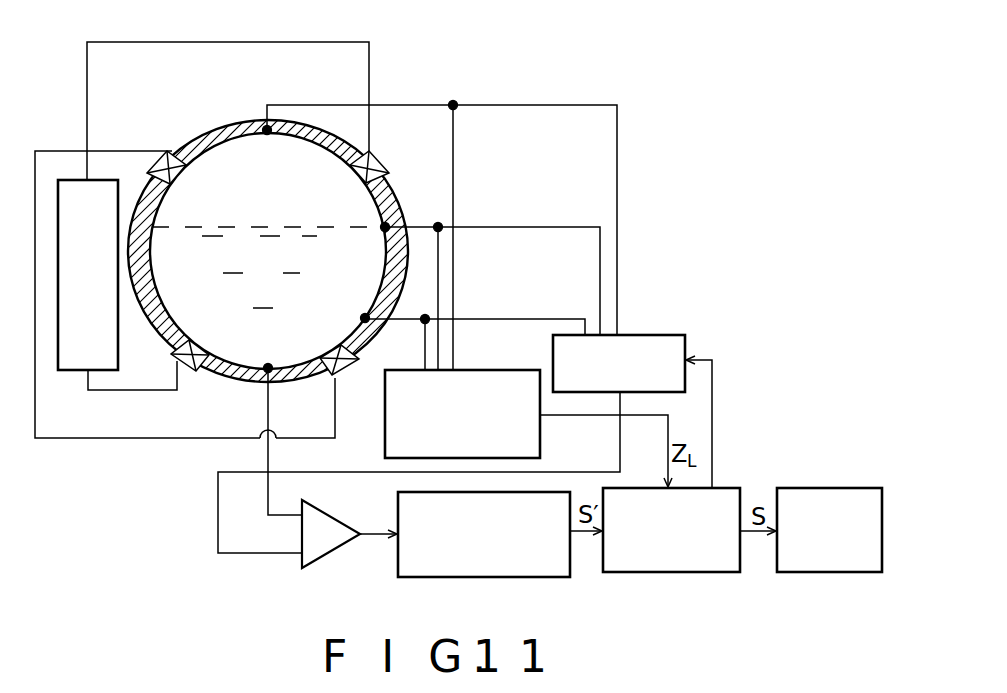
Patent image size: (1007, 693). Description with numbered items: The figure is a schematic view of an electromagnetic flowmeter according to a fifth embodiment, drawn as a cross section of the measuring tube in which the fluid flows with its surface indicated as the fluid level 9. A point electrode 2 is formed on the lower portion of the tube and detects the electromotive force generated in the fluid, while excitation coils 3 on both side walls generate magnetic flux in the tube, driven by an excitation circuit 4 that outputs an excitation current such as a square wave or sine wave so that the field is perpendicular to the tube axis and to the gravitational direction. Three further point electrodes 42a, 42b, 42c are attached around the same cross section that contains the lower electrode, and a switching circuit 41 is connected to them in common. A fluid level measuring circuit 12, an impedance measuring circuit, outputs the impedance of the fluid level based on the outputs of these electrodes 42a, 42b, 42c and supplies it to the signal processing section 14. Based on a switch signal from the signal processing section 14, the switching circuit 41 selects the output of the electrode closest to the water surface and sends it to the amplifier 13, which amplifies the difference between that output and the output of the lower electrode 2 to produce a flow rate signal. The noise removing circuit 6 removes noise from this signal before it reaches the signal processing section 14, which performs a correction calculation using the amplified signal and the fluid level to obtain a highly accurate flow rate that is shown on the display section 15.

The point electrode 2 is at (268, 366).
The excitation coils 3 is at (395, 177).
The excitation circuit 4 is at (73, 373).
The noise removing circuit 6 is at (535, 578).
The level of fluid 9 is at (256, 222).
The fluid level measuring circuit 12 is at (502, 368).
The amplifier 13 is at (342, 522).
The signal processing section 14 is at (682, 574).
The display section 15 is at (837, 574).
The switching circuit 41 is at (663, 333).
The point electrode 42a is at (365, 316).
The point electrode 42b is at (390, 224).
The point electrode 42c is at (250, 123).